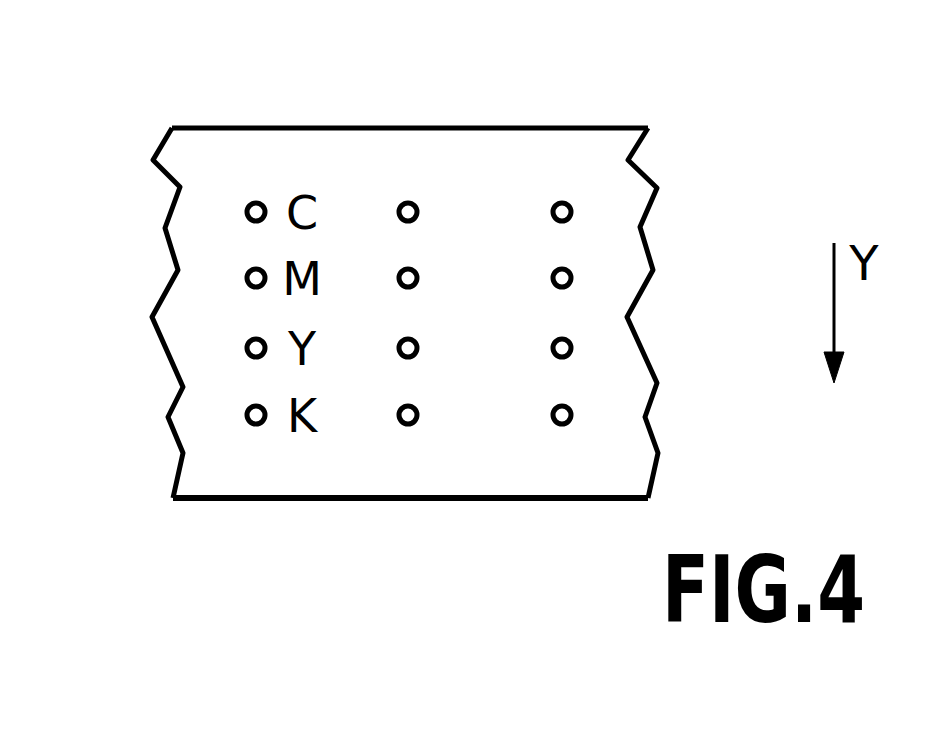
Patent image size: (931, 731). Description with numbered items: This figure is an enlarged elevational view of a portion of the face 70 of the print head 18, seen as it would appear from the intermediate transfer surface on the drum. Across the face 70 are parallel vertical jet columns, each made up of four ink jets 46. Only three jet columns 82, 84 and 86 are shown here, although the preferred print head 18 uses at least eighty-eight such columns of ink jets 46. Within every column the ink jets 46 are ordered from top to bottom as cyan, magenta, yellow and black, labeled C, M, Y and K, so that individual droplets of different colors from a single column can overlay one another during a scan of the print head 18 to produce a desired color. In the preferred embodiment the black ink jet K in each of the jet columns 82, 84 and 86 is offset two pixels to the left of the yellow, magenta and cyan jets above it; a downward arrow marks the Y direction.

The print head 18 is at (241, 128).
The face 70 is at (618, 178).
The ink jet 46 is at (409, 405).
The jet column 82 is at (256, 473).
The jet column 84 is at (408, 473).
The jet column 86 is at (562, 473).